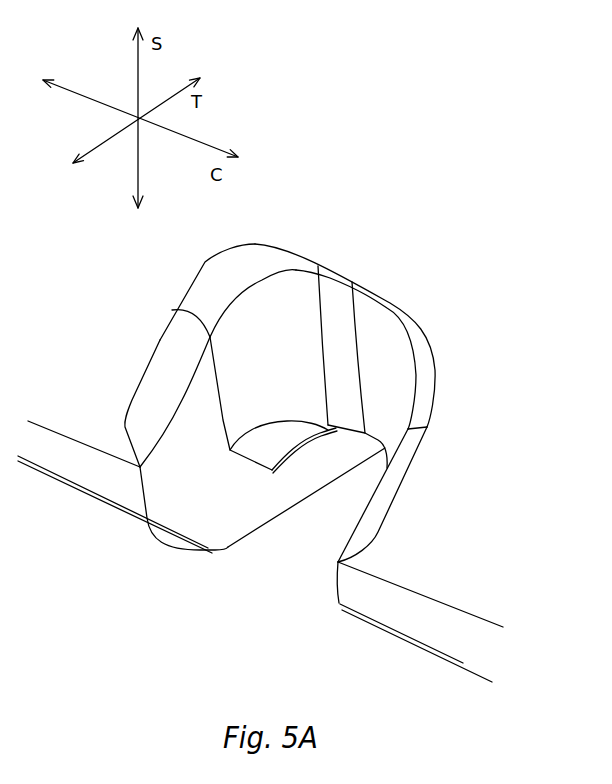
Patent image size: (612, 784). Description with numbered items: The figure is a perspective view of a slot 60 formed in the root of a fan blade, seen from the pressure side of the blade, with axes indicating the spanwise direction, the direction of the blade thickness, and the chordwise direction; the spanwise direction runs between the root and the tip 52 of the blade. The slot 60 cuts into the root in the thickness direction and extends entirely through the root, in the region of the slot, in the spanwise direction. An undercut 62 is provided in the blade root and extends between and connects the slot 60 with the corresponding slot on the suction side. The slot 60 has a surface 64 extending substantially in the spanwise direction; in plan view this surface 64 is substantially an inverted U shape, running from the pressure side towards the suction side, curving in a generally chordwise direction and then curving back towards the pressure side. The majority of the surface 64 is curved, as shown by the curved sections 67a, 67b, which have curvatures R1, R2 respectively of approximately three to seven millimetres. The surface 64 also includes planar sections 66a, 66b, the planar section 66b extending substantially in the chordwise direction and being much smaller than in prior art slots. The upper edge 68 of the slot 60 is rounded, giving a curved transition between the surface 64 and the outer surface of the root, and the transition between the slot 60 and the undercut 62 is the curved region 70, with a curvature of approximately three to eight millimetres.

The tip 52 is at (442, 563).
The slot 60 is at (279, 538).
The undercut 62 is at (333, 514).
The surface 64 is at (188, 455).
The planar section 66a is at (213, 500).
The planar section 66b is at (340, 297).
The curved section 67a is at (237, 317).
The curved section 67b is at (393, 355).
The upper edge 68 is at (143, 398).
The curved region 70 is at (252, 463).
The curvature R1 is at (268, 429).
The curvature R2 is at (382, 448).